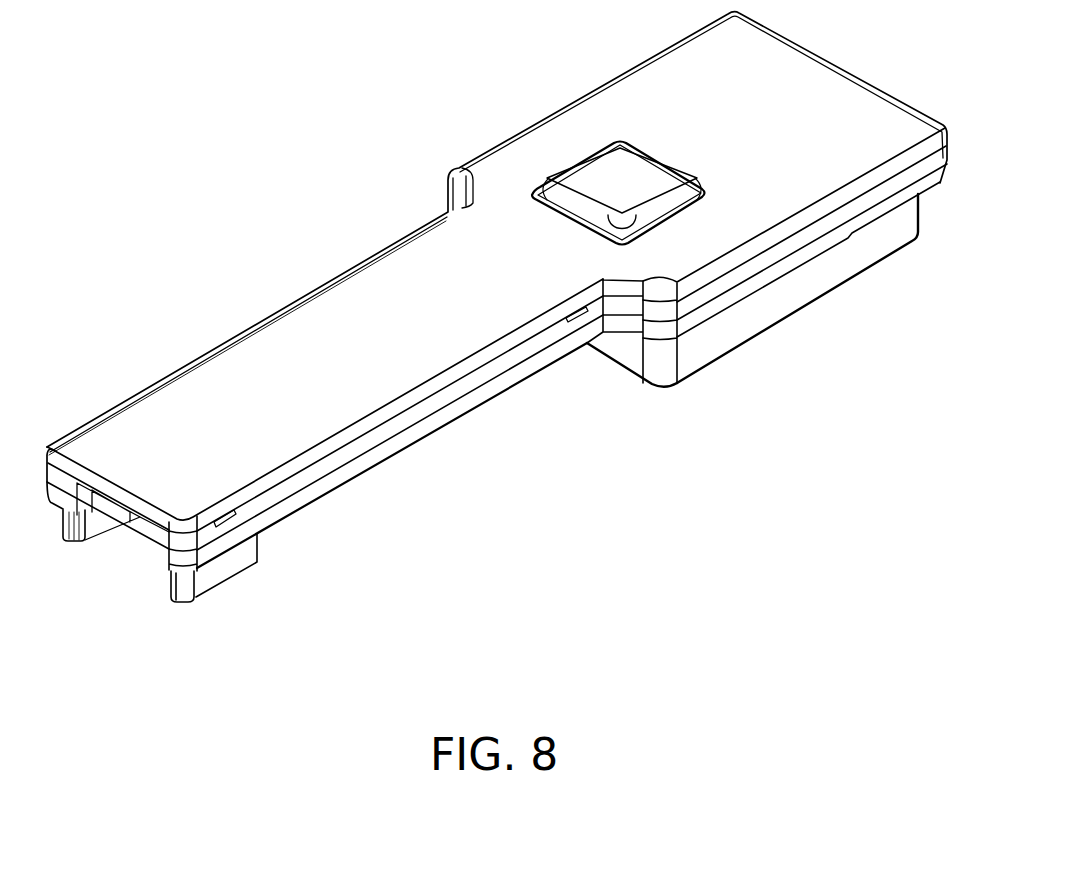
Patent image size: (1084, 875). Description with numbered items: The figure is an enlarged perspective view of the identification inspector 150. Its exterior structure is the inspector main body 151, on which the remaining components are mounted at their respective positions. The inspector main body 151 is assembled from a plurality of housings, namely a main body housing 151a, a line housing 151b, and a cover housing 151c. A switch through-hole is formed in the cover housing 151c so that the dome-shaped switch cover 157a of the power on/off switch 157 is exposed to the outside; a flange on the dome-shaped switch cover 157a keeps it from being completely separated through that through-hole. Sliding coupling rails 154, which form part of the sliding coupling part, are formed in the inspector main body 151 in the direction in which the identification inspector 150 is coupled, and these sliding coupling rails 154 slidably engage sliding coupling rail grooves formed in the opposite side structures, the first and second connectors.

The identification inspector 150 is at (242, 73).
The inspector main body 151 is at (385, 232).
The main body housing 151a is at (813, 287).
The line housing 151b is at (400, 445).
The cover housing 151c is at (243, 342).
The sliding coupling rails 154 is at (80, 540).
The power on/off switch 157 is at (659, 132).
The dome-shaped switch cover 157a is at (680, 175).